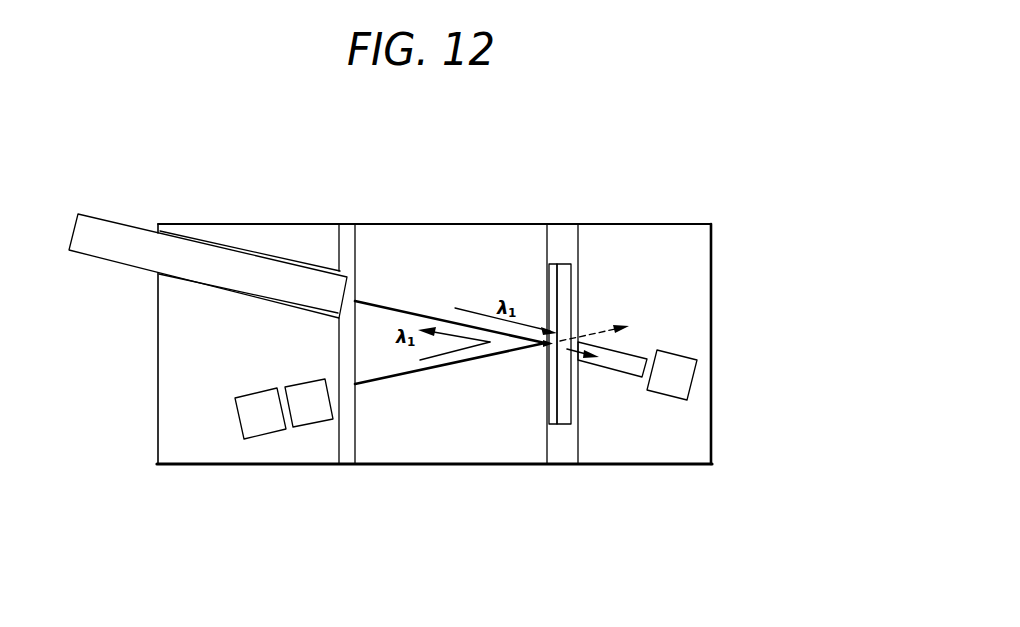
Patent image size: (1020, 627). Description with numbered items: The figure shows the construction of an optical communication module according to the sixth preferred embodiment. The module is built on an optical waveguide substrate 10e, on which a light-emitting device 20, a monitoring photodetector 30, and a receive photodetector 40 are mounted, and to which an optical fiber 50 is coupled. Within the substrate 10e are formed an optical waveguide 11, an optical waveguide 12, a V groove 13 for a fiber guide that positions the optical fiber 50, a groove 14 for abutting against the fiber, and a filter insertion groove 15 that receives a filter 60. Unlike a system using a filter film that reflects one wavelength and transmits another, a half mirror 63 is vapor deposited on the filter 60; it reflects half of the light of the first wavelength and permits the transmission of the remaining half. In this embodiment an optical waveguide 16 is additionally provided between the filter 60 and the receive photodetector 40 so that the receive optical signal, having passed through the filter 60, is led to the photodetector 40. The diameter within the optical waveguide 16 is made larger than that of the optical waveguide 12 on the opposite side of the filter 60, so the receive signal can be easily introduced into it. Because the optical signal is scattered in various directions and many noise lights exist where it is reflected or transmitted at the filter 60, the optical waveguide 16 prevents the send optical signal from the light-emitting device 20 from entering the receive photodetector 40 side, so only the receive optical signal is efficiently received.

The optical waveguide substrate 10e is at (366, 224).
The optical fiber 50 is at (76, 273).
The V groove for fiber guide 13 is at (200, 235).
The groove for abutting against fiber 14 is at (346, 447).
The optical waveguide 12 is at (412, 308).
The optical waveguide 11 is at (437, 373).
The filter insertion groove 15 is at (567, 447).
The half mirror 63 is at (552, 264).
The filter 60 is at (562, 264).
The optical waveguide 16 is at (618, 350).
The receive photodetector 40 is at (673, 390).
The light-emitting device 20 is at (292, 383).
The monitoring photodetector 30 is at (260, 427).